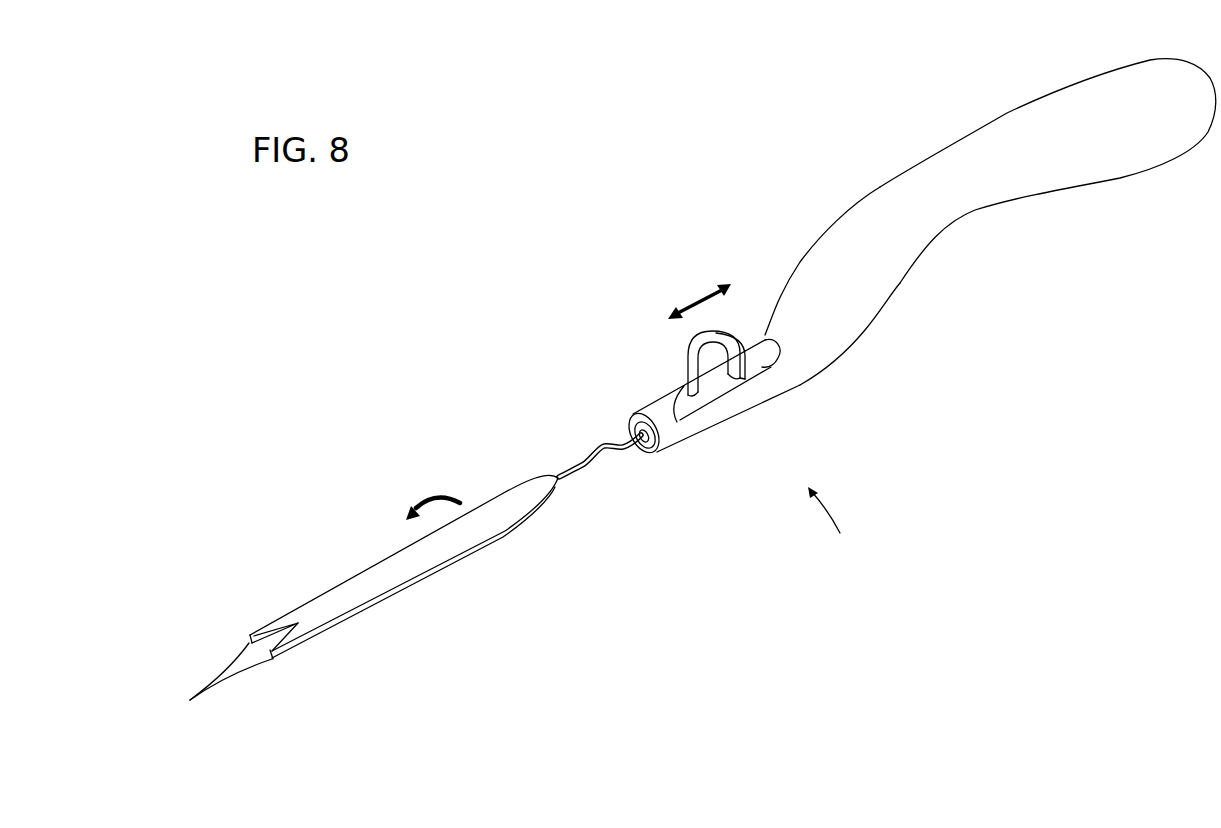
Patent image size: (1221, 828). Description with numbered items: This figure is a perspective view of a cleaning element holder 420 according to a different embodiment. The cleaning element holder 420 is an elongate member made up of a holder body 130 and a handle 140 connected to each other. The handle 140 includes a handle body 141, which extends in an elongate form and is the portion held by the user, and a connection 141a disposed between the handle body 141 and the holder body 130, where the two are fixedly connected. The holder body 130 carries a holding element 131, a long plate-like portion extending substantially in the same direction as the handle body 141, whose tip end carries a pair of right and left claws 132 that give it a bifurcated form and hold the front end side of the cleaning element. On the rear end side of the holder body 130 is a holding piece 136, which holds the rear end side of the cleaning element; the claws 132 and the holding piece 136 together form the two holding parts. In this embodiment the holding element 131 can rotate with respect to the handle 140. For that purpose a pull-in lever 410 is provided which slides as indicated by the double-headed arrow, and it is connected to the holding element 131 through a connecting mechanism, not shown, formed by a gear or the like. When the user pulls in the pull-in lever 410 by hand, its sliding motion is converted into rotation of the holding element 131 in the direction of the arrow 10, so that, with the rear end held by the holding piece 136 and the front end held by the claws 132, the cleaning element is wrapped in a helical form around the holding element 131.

The arrow 10 is at (433, 493).
The holder body 130 is at (478, 454).
The holding element 131 is at (393, 565).
The claws 132 is at (213, 695).
The holding piece 136 is at (658, 405).
The handle 140 is at (818, 190).
The handle body 141 is at (930, 222).
The connection 141a is at (798, 373).
The pull-in lever 410 is at (684, 364).
The cleaning element holder 420 is at (841, 529).